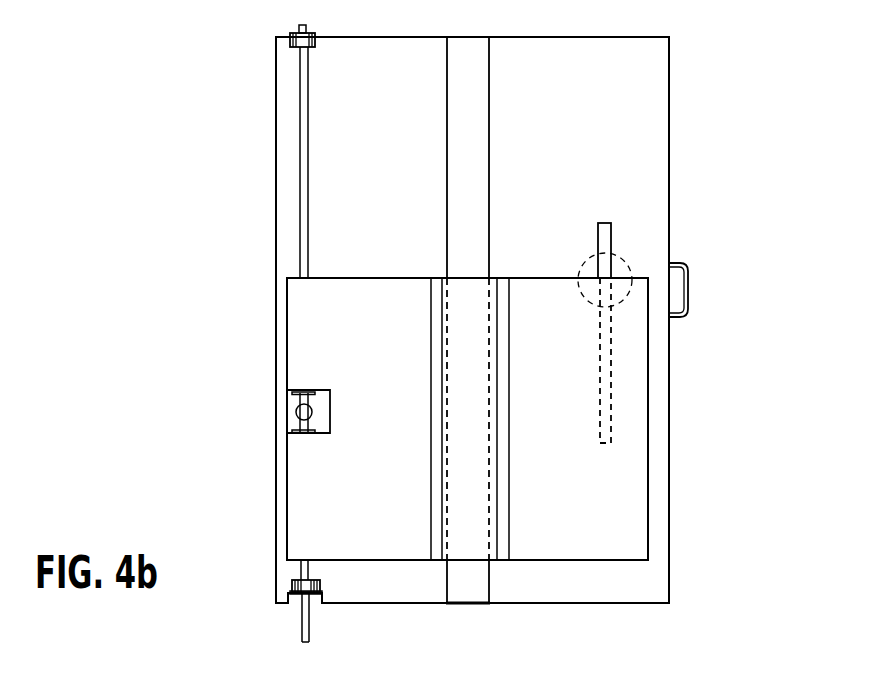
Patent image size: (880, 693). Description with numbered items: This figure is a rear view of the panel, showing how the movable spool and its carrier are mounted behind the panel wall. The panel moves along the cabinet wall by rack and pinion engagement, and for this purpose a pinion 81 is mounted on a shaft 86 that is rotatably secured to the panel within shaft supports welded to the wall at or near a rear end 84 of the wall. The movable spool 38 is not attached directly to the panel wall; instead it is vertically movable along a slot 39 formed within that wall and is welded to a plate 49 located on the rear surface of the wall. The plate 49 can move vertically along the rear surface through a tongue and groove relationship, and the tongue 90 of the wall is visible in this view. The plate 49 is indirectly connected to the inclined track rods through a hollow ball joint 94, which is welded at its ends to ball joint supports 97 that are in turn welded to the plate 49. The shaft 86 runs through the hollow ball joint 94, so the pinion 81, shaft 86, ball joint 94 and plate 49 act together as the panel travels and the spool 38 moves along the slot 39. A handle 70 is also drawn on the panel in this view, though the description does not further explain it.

The movable spool 38 is at (632, 258).
The slot 39 is at (611, 430).
The plate 49 is at (627, 410).
The handle 70 is at (689, 292).
The pinion 81 is at (291, 44).
The rear end 84 is at (276, 213).
The shaft 86 is at (300, 143).
The tongue 90 is at (460, 150).
The hollow ball joint 94 is at (297, 412).
The ball joint supports 97 is at (307, 392).